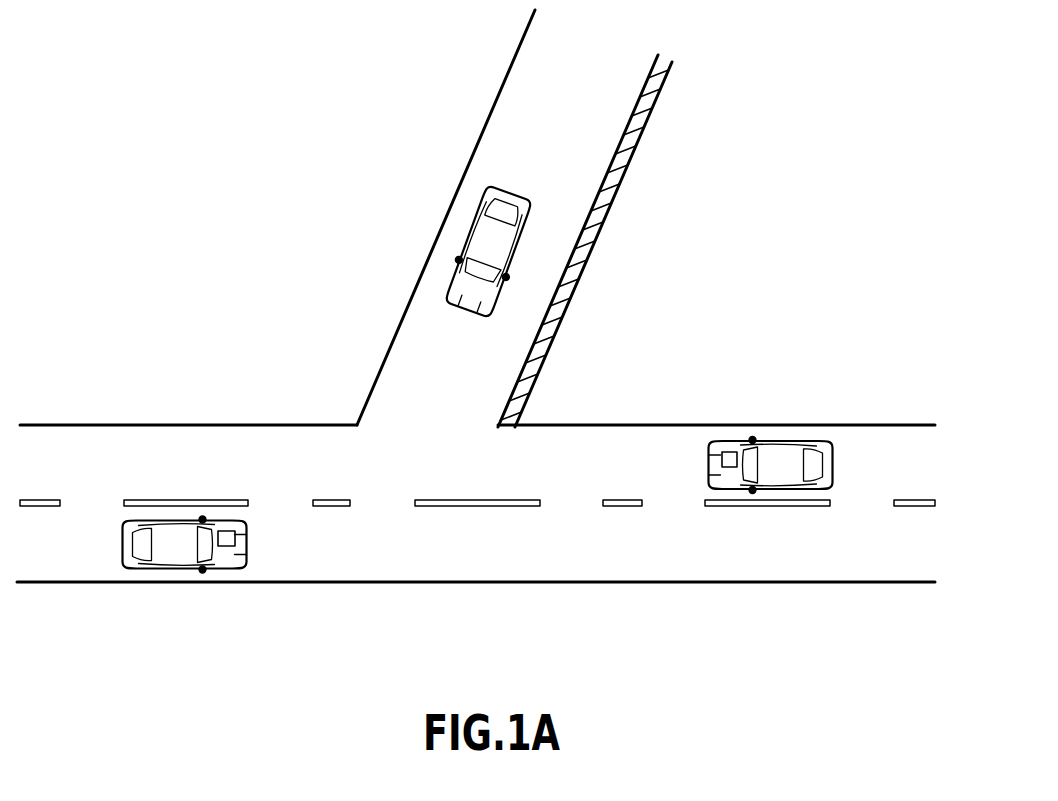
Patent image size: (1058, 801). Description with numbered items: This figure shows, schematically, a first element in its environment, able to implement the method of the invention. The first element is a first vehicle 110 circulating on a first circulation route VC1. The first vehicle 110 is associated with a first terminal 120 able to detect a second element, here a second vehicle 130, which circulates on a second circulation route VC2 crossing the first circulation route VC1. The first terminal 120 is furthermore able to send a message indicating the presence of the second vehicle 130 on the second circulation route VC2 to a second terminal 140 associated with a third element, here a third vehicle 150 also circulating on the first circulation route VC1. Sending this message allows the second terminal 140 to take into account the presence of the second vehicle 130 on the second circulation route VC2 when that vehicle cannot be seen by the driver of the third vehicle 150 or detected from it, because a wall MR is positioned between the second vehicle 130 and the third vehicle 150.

The first vehicle 110 is at (208, 512).
The first terminal 120 is at (228, 538).
The second vehicle 130 is at (493, 242).
The second terminal 140 is at (728, 457).
The third vehicle 150 is at (748, 435).
The first circulation route VC1 is at (378, 583).
The second circulation route VC2 is at (378, 372).
The wall MR is at (582, 250).